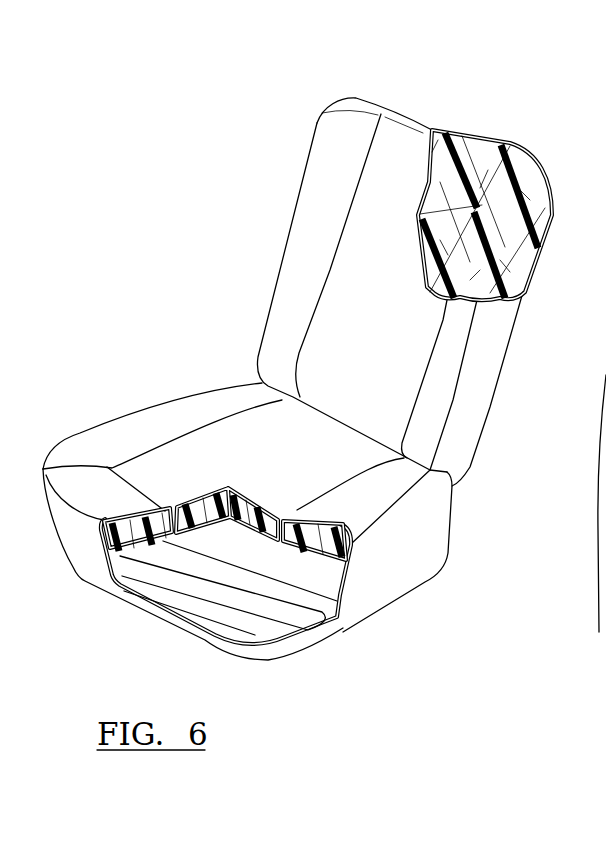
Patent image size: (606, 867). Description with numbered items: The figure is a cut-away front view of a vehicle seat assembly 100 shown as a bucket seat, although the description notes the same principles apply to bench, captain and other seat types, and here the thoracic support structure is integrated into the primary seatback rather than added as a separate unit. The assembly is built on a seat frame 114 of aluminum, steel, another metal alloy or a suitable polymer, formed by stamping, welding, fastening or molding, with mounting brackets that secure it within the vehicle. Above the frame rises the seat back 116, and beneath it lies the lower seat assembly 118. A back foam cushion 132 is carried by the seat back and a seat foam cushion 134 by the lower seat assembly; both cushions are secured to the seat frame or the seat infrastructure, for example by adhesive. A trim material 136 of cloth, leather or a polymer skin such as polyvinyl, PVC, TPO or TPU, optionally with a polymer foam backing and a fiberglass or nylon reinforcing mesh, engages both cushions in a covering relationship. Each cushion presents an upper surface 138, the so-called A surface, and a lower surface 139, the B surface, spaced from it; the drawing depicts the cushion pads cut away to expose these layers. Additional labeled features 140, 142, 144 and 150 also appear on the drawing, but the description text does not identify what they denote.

The vehicle seat assembly 100 is at (320, 387).
The seat frame 114 is at (281, 499).
The seat back 116 is at (477, 386).
The lower seat assembly 118 is at (452, 547).
The back foam cushion 132 is at (350, 383).
The seat foam cushion 134 is at (125, 534).
The trim material 136 is at (397, 572).
The upper surface 138 is at (472, 152).
The lower surface 139 is at (545, 227).
The adjacent seat 140 is at (605, 344).
The bolster top surface 142 is at (432, 503).
The seating surface recess 144 is at (182, 392).
The adjacent seat cushion 150 is at (605, 533).